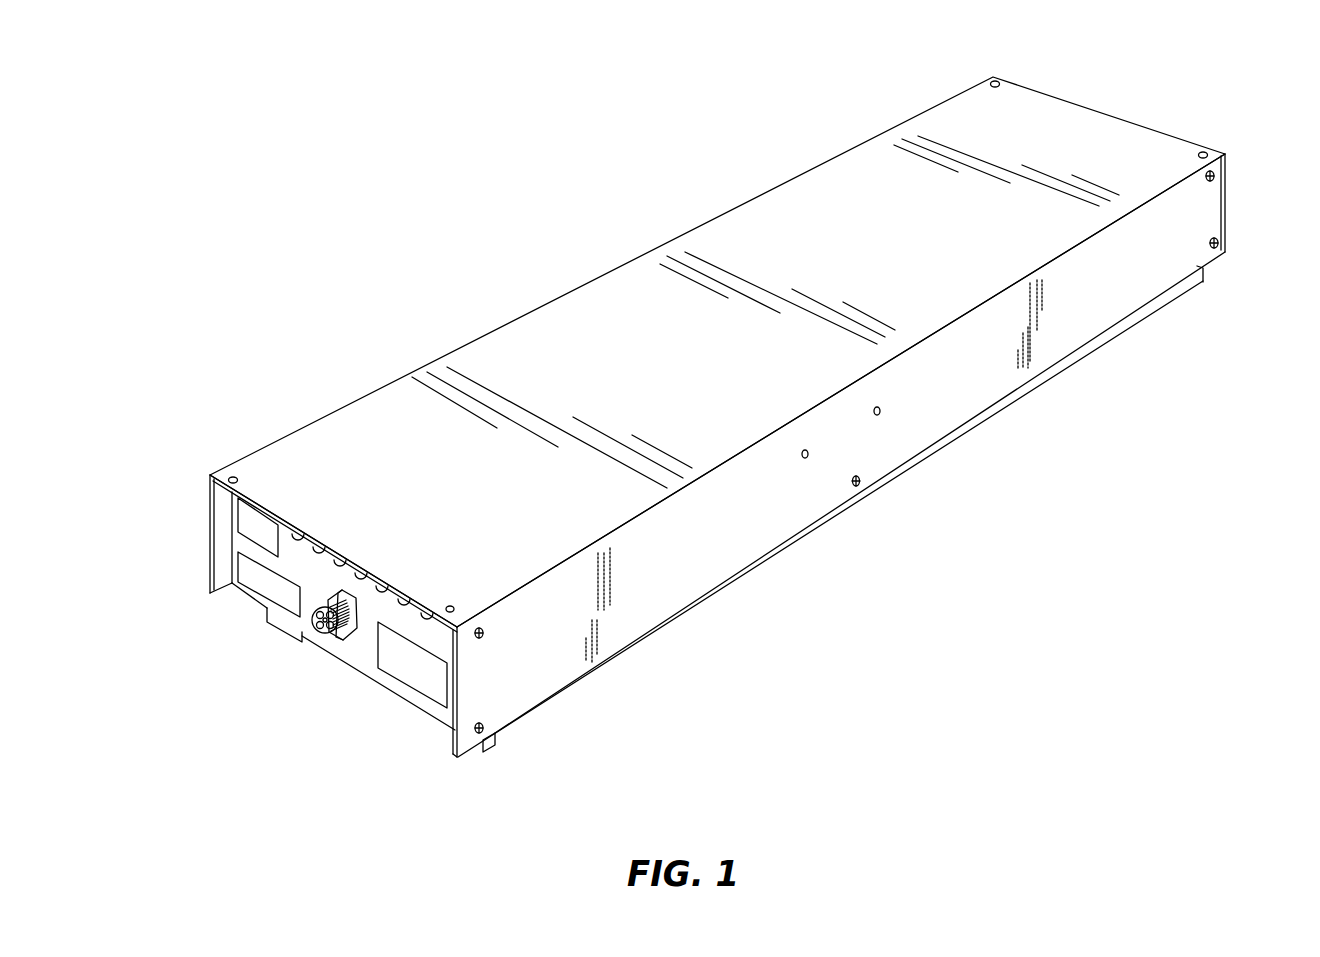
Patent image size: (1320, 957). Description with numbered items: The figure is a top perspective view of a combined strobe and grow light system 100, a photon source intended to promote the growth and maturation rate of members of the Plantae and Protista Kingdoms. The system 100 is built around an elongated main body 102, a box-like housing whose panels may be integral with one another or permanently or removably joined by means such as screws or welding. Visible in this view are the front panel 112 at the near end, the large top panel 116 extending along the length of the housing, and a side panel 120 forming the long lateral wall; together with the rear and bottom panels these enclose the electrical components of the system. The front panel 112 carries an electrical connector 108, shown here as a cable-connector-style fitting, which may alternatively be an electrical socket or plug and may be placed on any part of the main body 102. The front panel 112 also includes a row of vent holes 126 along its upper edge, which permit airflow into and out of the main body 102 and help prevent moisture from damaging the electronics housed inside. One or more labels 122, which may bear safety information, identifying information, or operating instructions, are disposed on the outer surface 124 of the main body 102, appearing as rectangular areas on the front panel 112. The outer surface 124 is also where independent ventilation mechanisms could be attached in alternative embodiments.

The combined strobe and grow light system 100 is at (318, 185).
The main body 102 is at (717, 417).
The electrical connector 108 is at (304, 661).
The front panel 112 is at (308, 565).
The top panel 116 is at (682, 312).
The side panel 120 is at (841, 443).
The labels 122 is at (224, 578).
The outer surface 124 is at (765, 259).
The vent holes 126 is at (349, 656).